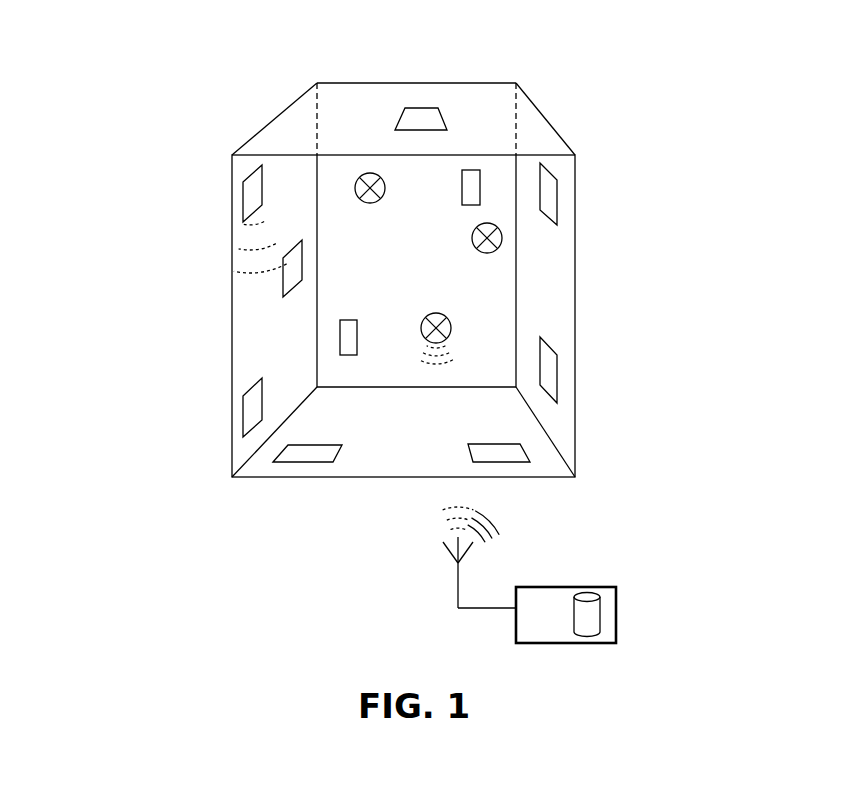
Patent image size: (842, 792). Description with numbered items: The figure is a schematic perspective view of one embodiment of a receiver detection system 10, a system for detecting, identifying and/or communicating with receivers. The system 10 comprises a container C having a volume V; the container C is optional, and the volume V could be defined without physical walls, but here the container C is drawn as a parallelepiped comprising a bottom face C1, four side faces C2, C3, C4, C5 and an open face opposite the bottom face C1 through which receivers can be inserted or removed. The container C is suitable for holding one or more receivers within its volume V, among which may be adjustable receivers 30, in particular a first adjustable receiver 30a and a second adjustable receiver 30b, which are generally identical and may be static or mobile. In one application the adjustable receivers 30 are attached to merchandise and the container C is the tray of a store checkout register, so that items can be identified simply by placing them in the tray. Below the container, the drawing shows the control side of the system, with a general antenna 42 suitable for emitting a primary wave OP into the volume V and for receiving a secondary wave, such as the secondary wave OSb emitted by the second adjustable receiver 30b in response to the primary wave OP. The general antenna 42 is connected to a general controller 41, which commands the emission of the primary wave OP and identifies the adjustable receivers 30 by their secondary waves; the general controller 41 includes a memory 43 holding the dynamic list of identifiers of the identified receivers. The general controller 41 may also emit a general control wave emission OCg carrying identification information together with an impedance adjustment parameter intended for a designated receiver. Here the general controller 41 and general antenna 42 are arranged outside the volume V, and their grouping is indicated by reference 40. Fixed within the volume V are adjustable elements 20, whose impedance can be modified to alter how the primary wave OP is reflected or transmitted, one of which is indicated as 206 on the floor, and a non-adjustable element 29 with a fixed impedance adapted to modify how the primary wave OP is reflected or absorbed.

The receiver detection system 10 is at (686, 124).
The adjustable element 20 is at (558, 202).
The floor opening 206 is at (516, 416).
The non-adjustable element 29 is at (420, 118).
The adjustable receiver 30 is at (281, 191).
The first adjustable receiver 30a is at (359, 177).
The second adjustable receiver 30b is at (421, 325).
The control system 40 is at (478, 606).
The general controller 41 is at (553, 646).
The general antenna 42 is at (472, 612).
The memory 43 is at (600, 614).
The container C is at (540, 112).
The bottom face C1 is at (502, 276).
The side face C2 is at (575, 308).
The side face C3 is at (348, 478).
The side face C4 is at (232, 445).
The side face C5 is at (500, 97).
The volume V is at (499, 179).
The secondary wave OSb is at (473, 352).
The primary wave OP is at (447, 522).
The general control wave emission OCg is at (487, 535).